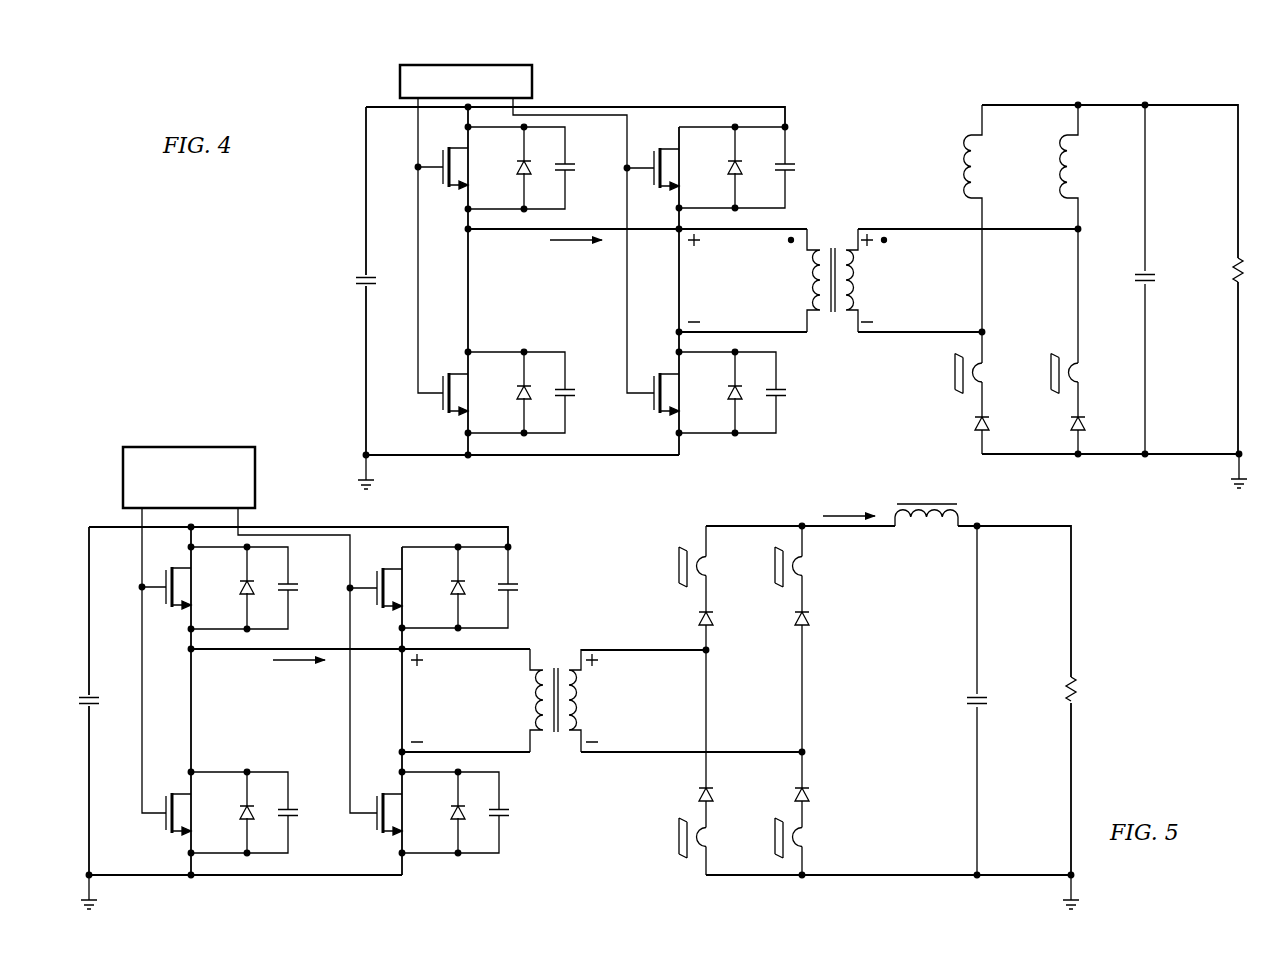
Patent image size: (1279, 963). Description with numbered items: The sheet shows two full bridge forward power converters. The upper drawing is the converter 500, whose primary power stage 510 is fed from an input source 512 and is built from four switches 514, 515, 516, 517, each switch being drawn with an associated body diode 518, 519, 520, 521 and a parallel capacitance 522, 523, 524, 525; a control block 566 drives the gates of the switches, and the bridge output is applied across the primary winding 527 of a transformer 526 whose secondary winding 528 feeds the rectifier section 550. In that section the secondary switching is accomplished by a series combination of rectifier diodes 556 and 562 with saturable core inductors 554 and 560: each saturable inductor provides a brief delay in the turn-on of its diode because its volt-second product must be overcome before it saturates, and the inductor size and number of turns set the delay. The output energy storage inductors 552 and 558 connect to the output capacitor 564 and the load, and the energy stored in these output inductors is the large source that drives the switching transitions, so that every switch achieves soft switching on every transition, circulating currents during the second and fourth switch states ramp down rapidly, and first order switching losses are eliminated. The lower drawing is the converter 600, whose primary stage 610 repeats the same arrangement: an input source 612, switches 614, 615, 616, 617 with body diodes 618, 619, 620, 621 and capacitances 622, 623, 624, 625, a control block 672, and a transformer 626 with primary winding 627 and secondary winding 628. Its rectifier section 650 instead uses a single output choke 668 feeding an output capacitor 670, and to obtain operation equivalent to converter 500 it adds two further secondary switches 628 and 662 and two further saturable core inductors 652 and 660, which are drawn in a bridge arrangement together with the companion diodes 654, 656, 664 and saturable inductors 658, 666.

In FIG. 4, the power converter 500 is at (280, 211).
In FIG. 4, the full-bridge power stage 510 is at (382, 105).
In FIG. 4, the input capacitor (Vin) 512 is at (382, 273).
In FIG. 4, the switch 514 is at (441, 186).
In FIG. 4, the switch 515 is at (440, 404).
In FIG. 4, the switch 516 is at (649, 187).
In FIG. 4, the switch 517 is at (657, 414).
In FIG. 4, the body diode of first switch 518 is at (520, 165).
In FIG. 4, the body diode of second switch 519 is at (520, 390).
In FIG. 4, the body diode of third switch 520 is at (731, 165).
In FIG. 4, the body diode of fourth switch 521 is at (731, 391).
In FIG. 4, the switch capacitance 522 is at (576, 170).
In FIG. 4, the switch capacitance 523 is at (576, 395).
In FIG. 4, the switch capacitance 524 is at (797, 168).
In FIG. 4, the switch capacitance 525 is at (788, 394).
In FIG. 4, the transformer 526 is at (833, 247).
In FIG. 4, the primary winding 527 is at (814, 247).
In FIG. 4, the secondary winding 528 is at (853, 315).
In FIG. 4, the current doubler rectifier 550 is at (1224, 105).
In FIG. 4, the output energy storage inductor 552 is at (980, 172).
In FIG. 4, the saturable core inductor 554 is at (952, 370).
In FIG. 4, the rectifier diode 556 is at (990, 423).
In FIG. 4, the output energy storage inductor 558 is at (1062, 168).
In FIG. 4, the saturable core inductor 560 is at (1050, 368).
In FIG. 4, the rectifier diode 562 is at (1086, 423).
In FIG. 4, the output capacitor (Co) 564 is at (1158, 283).
In FIG. 4, the control circuit / load resistor 566 is at (532, 80).
In FIG. 5, the power converter 600 is at (1122, 772).
In FIG. 5, the full-bridge power stage 610 is at (105, 523).
In FIG. 5, the input capacitor (Vin) 612 is at (104, 692).
In FIG. 5, the first switch 614 is at (164, 606).
In FIG. 5, the second switch 615 is at (163, 825).
In FIG. 5, the third switch 616 is at (372, 607).
In FIG. 5, the fourth switch 617 is at (364, 833).
In FIG. 5, the body diode of first switch 618 is at (243, 585).
In FIG. 5, the body diode of second switch 619 is at (243, 810).
In FIG. 5, the body diode of third switch 620 is at (454, 585).
In FIG. 5, the body diode of fourth switch 621 is at (454, 812).
In FIG. 5, the switch capacitance 622 is at (299, 590).
In FIG. 5, the switch capacitance 623 is at (300, 812).
In FIG. 5, the switch capacitance 624 is at (520, 588).
In FIG. 5, the switch capacitance 625 is at (511, 815).
In FIG. 5, the transformer 626 is at (556, 667).
In FIG. 5, the primary winding 627 is at (537, 667).
In FIG. 5, the secondary switch 628 is at (576, 742).
In FIG. 5, the full-wave bridge rectifier 650 is at (1058, 526).
In FIG. 5, the saturable core inductor 652 is at (676, 565).
In FIG. 5, the rectifier diode 654 is at (712, 618).
In FIG. 5, the rectifier diode 656 is at (712, 794).
In FIG. 5, the saturable reactor 658 is at (676, 836).
In FIG. 5, the saturable core inductor 660 is at (773, 565).
In FIG. 5, the secondary switch 662 is at (808, 618).
In FIG. 5, the rectifier diode 664 is at (808, 794).
In FIG. 5, the saturable reactor 666 is at (773, 836).
In FIG. 5, the output choke 668 is at (965, 518).
In FIG. 5, the output capacitor (Co) 670 is at (989, 700).
In FIG. 5, the control circuit / load resistor 672 is at (193, 446).